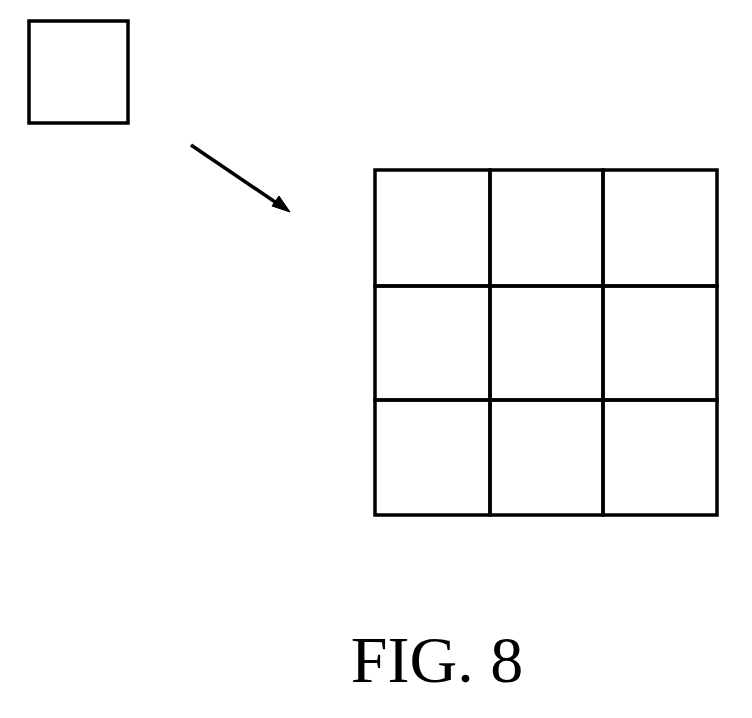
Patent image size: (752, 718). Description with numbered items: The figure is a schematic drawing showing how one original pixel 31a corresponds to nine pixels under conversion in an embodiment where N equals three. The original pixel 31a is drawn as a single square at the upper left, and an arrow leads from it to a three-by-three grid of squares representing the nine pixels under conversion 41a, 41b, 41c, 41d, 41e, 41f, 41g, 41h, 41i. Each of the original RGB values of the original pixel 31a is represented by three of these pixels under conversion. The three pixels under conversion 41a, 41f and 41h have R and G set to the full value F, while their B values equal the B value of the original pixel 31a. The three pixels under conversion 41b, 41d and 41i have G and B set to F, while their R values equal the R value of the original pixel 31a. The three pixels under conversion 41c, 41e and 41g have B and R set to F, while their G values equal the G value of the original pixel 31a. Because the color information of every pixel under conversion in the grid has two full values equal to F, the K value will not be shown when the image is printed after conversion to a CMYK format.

The original pixel 31a is at (78, 72).
The pixel under conversion 41a is at (432, 228).
The pixel under conversion 41b is at (546, 228).
The pixel under conversion 41c is at (660, 228).
The pixel under conversion 41d is at (432, 343).
The pixel under conversion 41e is at (546, 343).
The pixel under conversion 41f is at (660, 343).
The pixel under conversion 41g is at (432, 457).
The pixel under conversion 41h is at (546, 457).
The pixel under conversion 41i is at (660, 457).